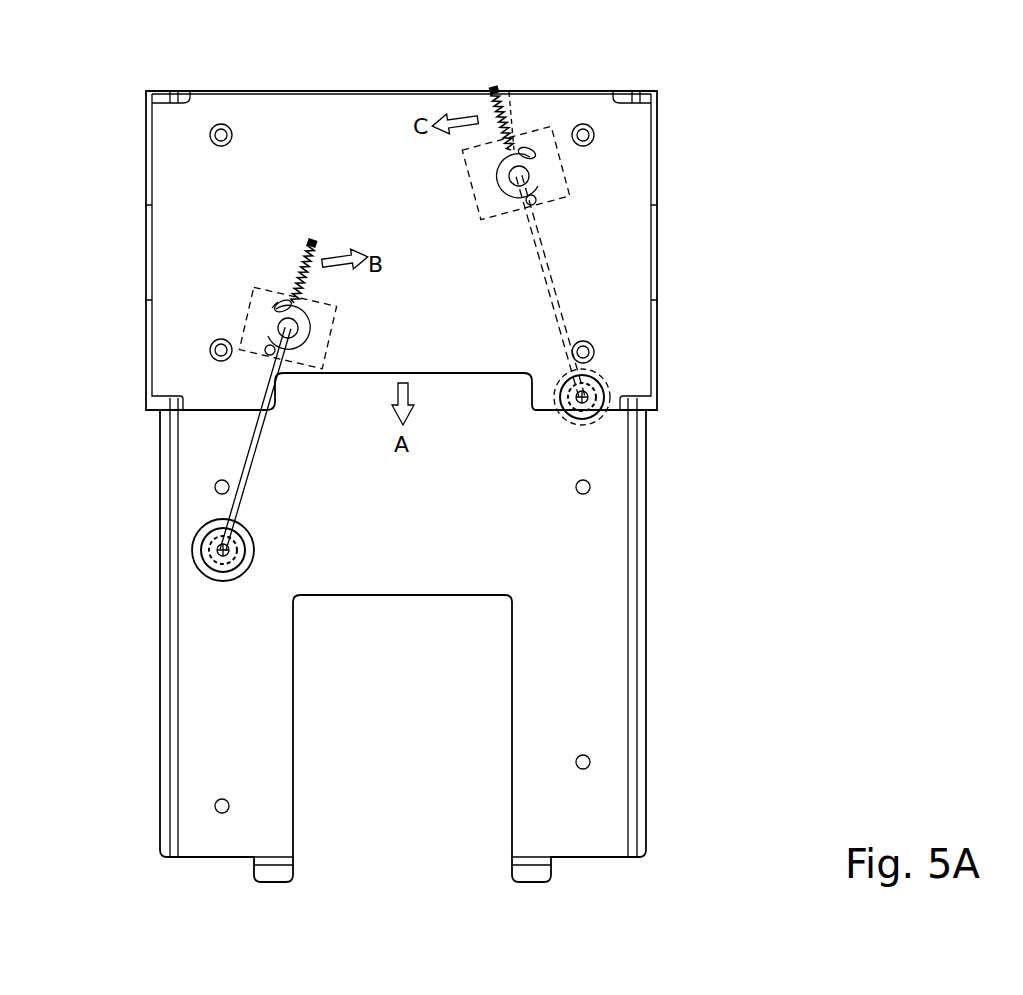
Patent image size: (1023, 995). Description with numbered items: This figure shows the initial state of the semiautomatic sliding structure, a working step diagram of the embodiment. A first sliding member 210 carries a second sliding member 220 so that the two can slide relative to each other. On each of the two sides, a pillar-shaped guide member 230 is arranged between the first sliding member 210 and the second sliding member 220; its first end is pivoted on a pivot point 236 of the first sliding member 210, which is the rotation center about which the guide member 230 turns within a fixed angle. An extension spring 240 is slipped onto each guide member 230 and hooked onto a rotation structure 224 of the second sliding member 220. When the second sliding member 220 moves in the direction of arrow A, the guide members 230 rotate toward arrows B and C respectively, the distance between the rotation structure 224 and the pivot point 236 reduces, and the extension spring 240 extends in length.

The first sliding member 210 is at (585, 708).
The second sliding member 220 is at (343, 112).
The rotation structure 224 is at (332, 345).
The guide member 230 is at (256, 455).
The pivot point 236 is at (248, 556).
The extension spring 240 is at (312, 243).